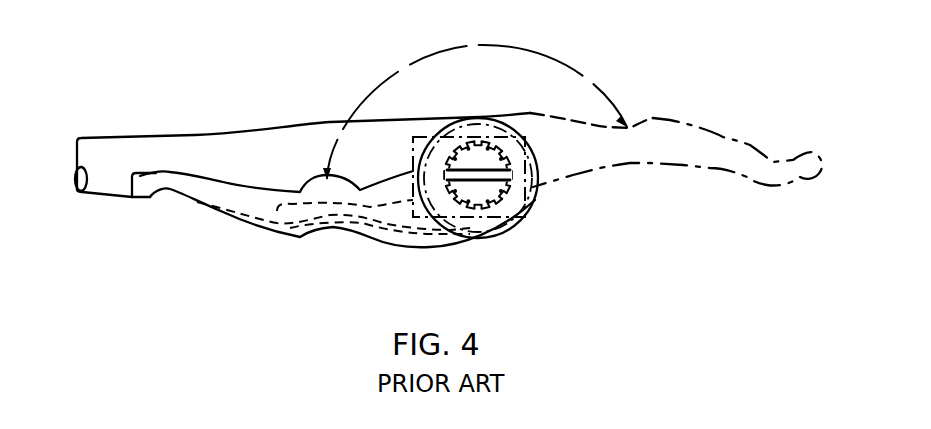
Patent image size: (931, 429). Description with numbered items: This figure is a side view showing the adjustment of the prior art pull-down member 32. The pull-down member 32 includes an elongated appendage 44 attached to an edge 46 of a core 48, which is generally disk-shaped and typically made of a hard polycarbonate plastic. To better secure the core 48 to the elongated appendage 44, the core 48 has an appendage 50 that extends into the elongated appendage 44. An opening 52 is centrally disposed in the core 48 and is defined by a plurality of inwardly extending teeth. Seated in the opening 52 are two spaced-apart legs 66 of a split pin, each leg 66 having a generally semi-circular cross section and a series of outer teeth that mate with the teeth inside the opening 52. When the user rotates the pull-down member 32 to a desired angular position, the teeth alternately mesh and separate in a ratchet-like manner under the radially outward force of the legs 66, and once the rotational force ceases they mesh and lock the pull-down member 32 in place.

The pull-down member 32 is at (710, 120).
The elongated appendage 44 is at (715, 157).
The edge 46 is at (498, 233).
The core 48 is at (467, 133).
The appendage 50 is at (378, 218).
The opening 52 is at (525, 201).
The legs 66 is at (498, 190).